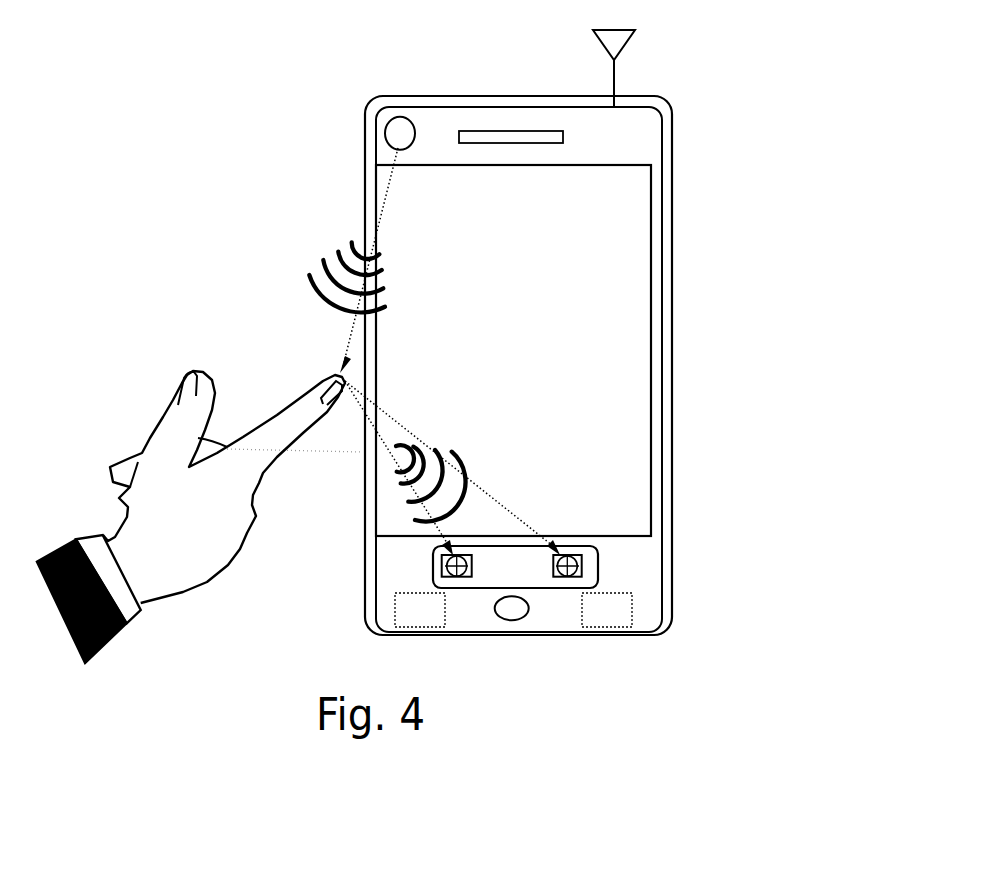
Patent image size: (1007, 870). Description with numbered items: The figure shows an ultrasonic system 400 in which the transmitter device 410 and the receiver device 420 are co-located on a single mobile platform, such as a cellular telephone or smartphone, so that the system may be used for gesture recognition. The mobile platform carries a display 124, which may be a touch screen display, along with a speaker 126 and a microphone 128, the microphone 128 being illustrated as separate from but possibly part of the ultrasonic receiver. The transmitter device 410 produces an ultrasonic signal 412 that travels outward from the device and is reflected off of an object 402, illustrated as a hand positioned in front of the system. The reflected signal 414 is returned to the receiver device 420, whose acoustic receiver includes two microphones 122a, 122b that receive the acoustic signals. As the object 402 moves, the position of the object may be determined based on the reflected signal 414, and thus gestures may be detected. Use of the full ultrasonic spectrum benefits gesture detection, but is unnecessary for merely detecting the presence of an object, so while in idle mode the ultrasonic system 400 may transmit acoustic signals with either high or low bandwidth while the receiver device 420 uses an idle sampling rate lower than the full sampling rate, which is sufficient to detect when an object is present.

The ultrasonic system 400 is at (160, 152).
The object 402 is at (150, 436).
The transmitter device 410 is at (388, 124).
The ultrasonic signal 412 is at (318, 294).
The reflected signal 414 is at (453, 452).
The receiver device 420 is at (598, 575).
The microphone 122a is at (433, 564).
The microphone 122b is at (573, 556).
The display 124 is at (652, 287).
The speaker 126 is at (492, 130).
The microphone 128 is at (495, 616).